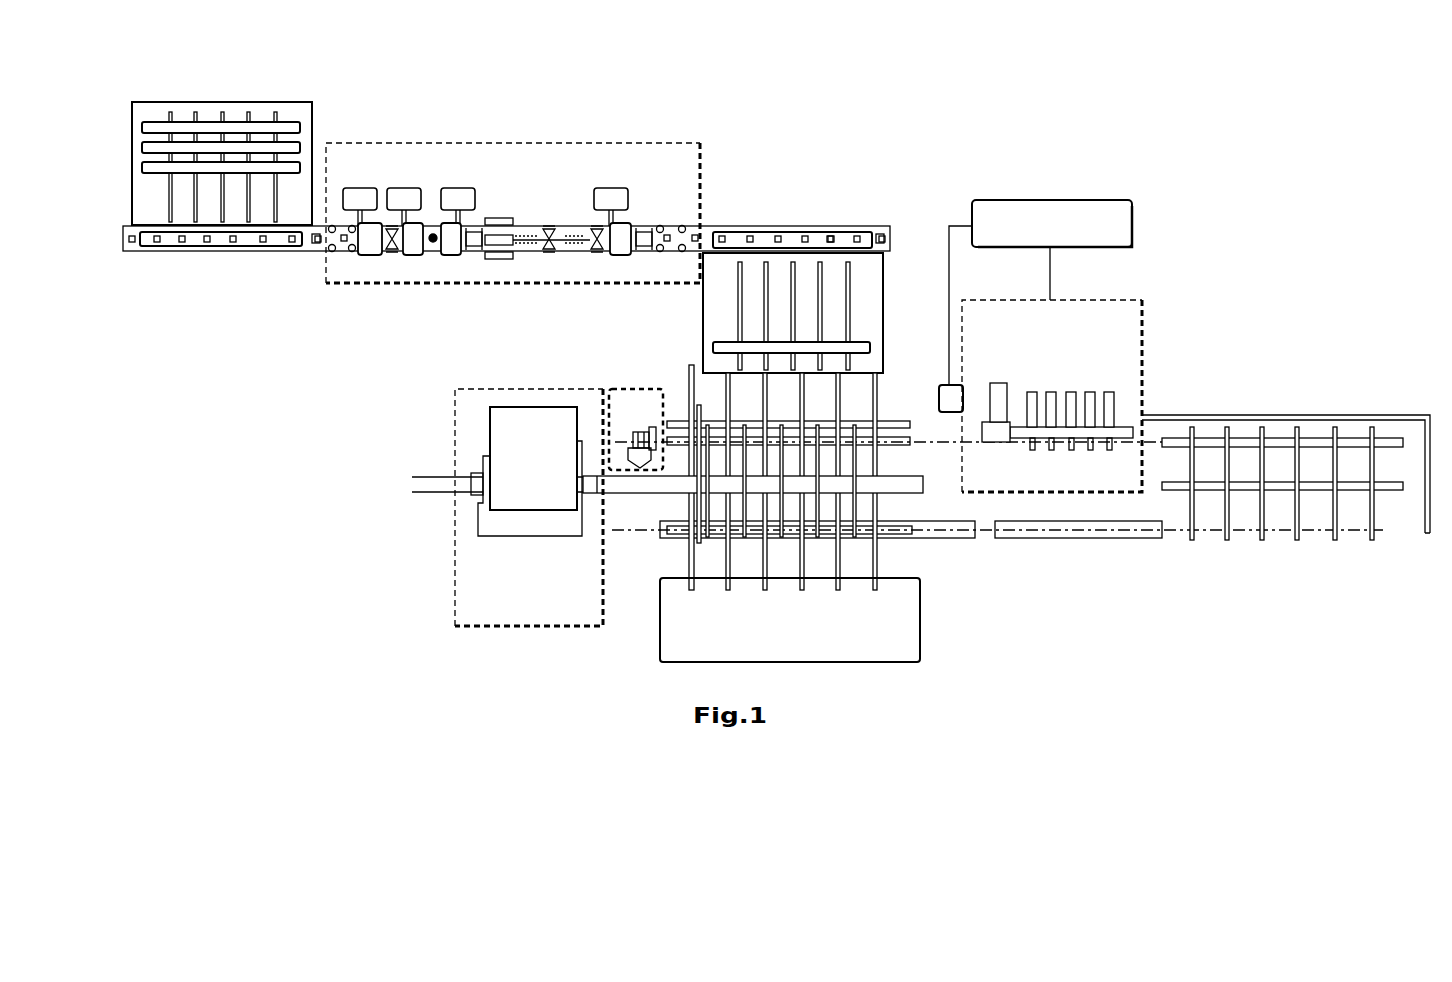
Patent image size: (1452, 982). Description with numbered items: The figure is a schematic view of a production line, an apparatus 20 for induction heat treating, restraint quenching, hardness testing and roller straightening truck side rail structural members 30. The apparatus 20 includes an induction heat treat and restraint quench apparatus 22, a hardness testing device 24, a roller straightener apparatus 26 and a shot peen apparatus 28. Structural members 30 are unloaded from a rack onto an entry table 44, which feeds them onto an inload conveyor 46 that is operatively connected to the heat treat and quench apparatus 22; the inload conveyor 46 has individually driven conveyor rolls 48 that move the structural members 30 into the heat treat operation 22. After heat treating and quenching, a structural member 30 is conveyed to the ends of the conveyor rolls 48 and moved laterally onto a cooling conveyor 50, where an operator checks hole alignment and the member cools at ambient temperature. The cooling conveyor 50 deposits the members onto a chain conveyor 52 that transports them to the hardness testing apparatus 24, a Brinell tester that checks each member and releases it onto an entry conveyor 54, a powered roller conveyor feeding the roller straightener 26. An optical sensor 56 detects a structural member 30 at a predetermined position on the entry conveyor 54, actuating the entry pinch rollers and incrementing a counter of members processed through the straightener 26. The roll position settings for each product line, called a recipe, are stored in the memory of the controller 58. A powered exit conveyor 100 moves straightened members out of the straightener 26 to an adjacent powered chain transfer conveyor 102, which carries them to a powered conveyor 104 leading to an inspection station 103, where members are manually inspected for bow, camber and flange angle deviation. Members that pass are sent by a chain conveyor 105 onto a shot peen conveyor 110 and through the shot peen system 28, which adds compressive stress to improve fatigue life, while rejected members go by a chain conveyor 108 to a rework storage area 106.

The apparatus 20 is at (1084, 102).
The induction heat treat and restraint quench apparatus 22 is at (531, 143).
The hardness testing device 24 is at (640, 388).
The roller straightener apparatus 26 is at (1150, 335).
The shot peen apparatus 28 is at (488, 630).
The structural members 30 is at (302, 168).
The entry table 44 is at (152, 100).
The inload conveyor 46 is at (267, 260).
The conveyor rolls 48 is at (316, 243).
The cooling conveyor 50 is at (703, 306).
The chain conveyor 52 is at (687, 366).
The entry conveyor 54 is at (898, 446).
The optical sensor 56 is at (938, 398).
The controller 58 is at (1035, 198).
The powered exit conveyor 100 is at (1388, 438).
The powered chain transfer conveyor 102 is at (1391, 545).
The inspection station 103 is at (892, 551).
The powered conveyor 104 is at (1085, 540).
The chain conveyor 105 is at (858, 503).
The rework storage area 106 is at (920, 632).
The chain conveyor 108 is at (689, 560).
The shot peen conveyor 110 is at (668, 485).